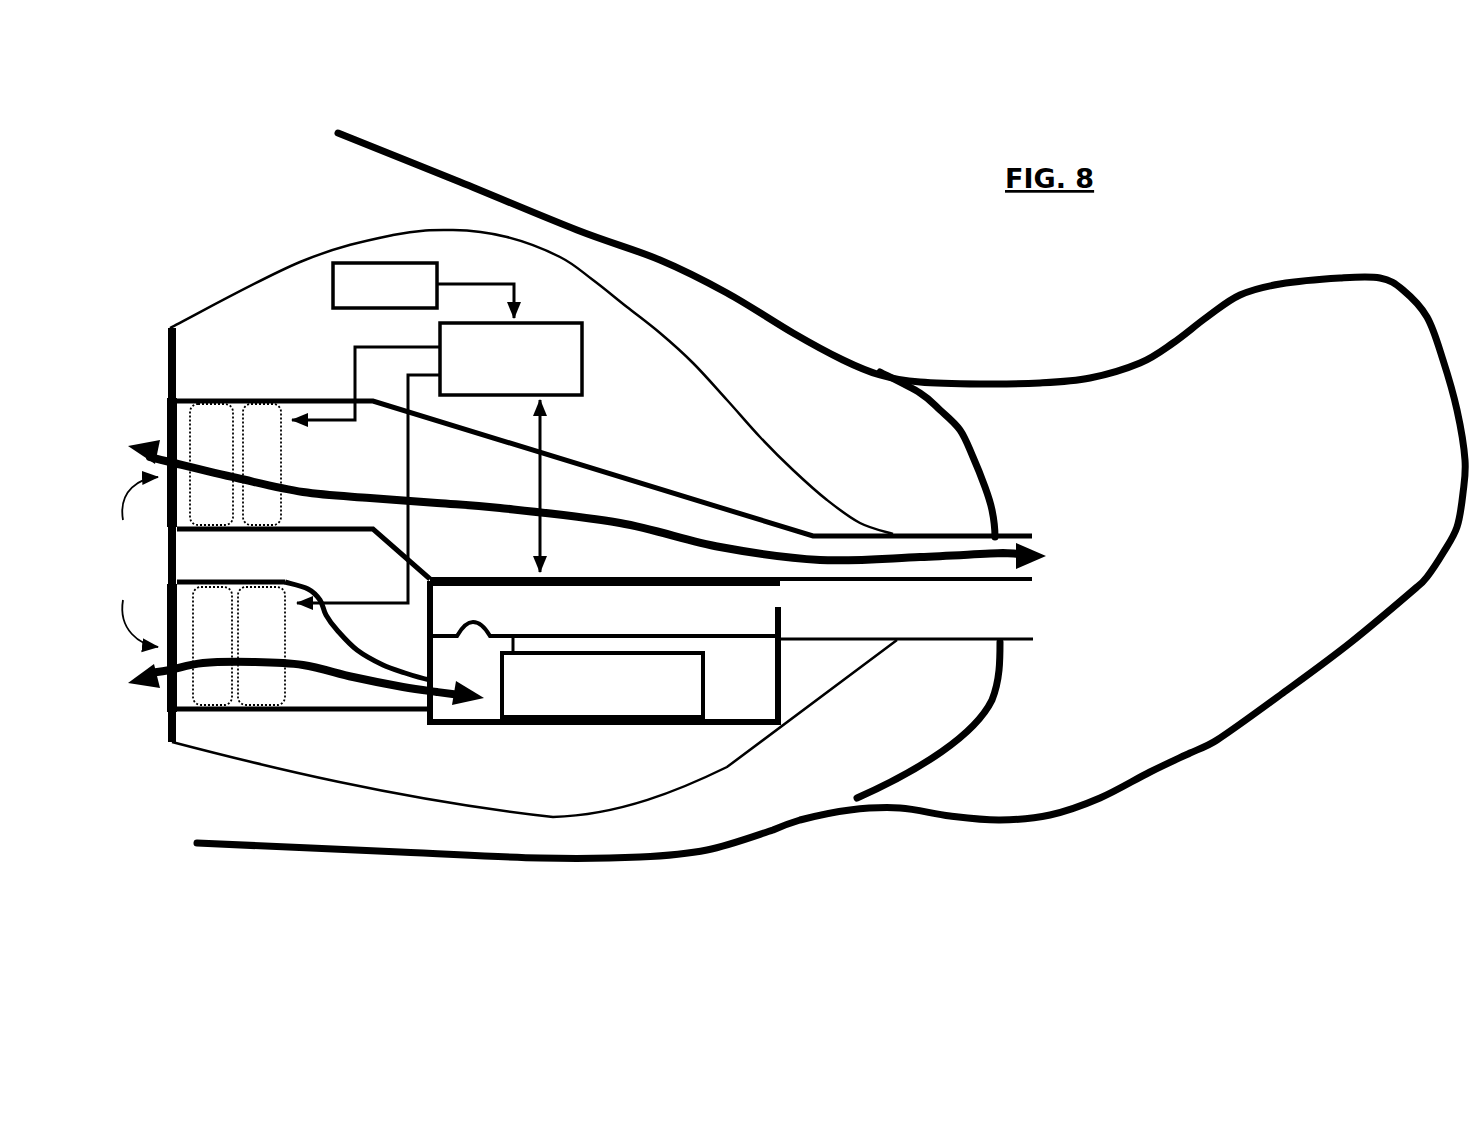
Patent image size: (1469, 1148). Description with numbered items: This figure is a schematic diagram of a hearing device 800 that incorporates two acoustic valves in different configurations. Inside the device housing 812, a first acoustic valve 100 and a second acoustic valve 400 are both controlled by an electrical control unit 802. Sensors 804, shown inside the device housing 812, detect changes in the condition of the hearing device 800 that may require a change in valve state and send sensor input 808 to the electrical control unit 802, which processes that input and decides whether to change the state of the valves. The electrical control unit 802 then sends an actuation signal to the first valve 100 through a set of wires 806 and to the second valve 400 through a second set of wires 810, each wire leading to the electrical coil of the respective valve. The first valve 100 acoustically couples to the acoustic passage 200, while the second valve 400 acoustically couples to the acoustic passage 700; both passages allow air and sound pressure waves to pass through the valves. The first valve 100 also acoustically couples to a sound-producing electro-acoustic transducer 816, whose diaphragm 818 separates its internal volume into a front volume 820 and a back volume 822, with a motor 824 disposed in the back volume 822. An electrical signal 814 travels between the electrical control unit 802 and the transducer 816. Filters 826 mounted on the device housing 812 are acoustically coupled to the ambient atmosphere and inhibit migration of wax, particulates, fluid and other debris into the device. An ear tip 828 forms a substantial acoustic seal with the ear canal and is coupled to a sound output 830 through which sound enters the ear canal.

The acoustic valve 100 is at (212, 688).
The acoustic passage 200 is at (337, 675).
The acoustic valve 400 is at (213, 420).
The acoustic passage 700 is at (623, 520).
The hearing device 800 is at (714, 314).
The electrical control unit 802 is at (551, 323).
The sensors 804 is at (394, 263).
The set of wires 806 is at (412, 474).
The sensor input 808 is at (487, 283).
The second set of wires 810 is at (353, 368).
The device housing 812 is at (553, 817).
The electrical signal 814 is at (545, 432).
The electro-acoustic transducer 816 is at (642, 750).
The diaphragm 818 is at (727, 638).
The front volume 820 is at (477, 600).
The back volume 822 is at (748, 700).
The motor 824 is at (547, 697).
The filters 826 is at (128, 562).
The ear tip 828 is at (984, 458).
The sound output 830 is at (1082, 582).